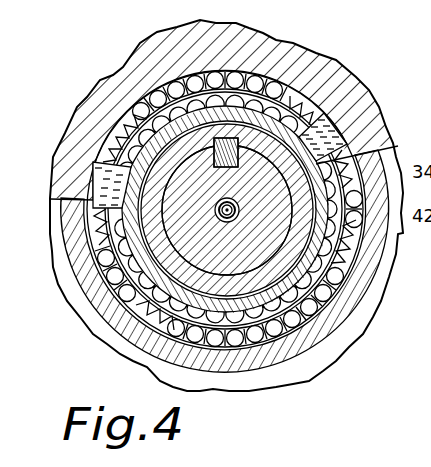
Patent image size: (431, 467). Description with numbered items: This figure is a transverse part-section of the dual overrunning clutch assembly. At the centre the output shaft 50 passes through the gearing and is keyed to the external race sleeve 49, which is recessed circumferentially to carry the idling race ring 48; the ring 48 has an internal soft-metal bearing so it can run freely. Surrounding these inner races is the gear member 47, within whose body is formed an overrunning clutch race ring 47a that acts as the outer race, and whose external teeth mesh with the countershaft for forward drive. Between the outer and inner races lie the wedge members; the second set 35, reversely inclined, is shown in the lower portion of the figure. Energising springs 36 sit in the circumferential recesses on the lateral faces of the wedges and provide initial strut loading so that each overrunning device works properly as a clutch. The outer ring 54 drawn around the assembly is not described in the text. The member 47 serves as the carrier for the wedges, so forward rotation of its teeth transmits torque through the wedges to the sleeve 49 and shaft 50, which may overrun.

The second set of wedge members 35 is at (128, 110).
The energising springs 36 is at (128, 152).
The gear member 47 is at (356, 97).
The overrunning clutch race ring 47a is at (384, 137).
The idling race ring 48 is at (266, 304).
The external race sleeve 49 is at (288, 264).
The output shaft 50 is at (178, 200).
The outer ring 54 is at (110, 291).